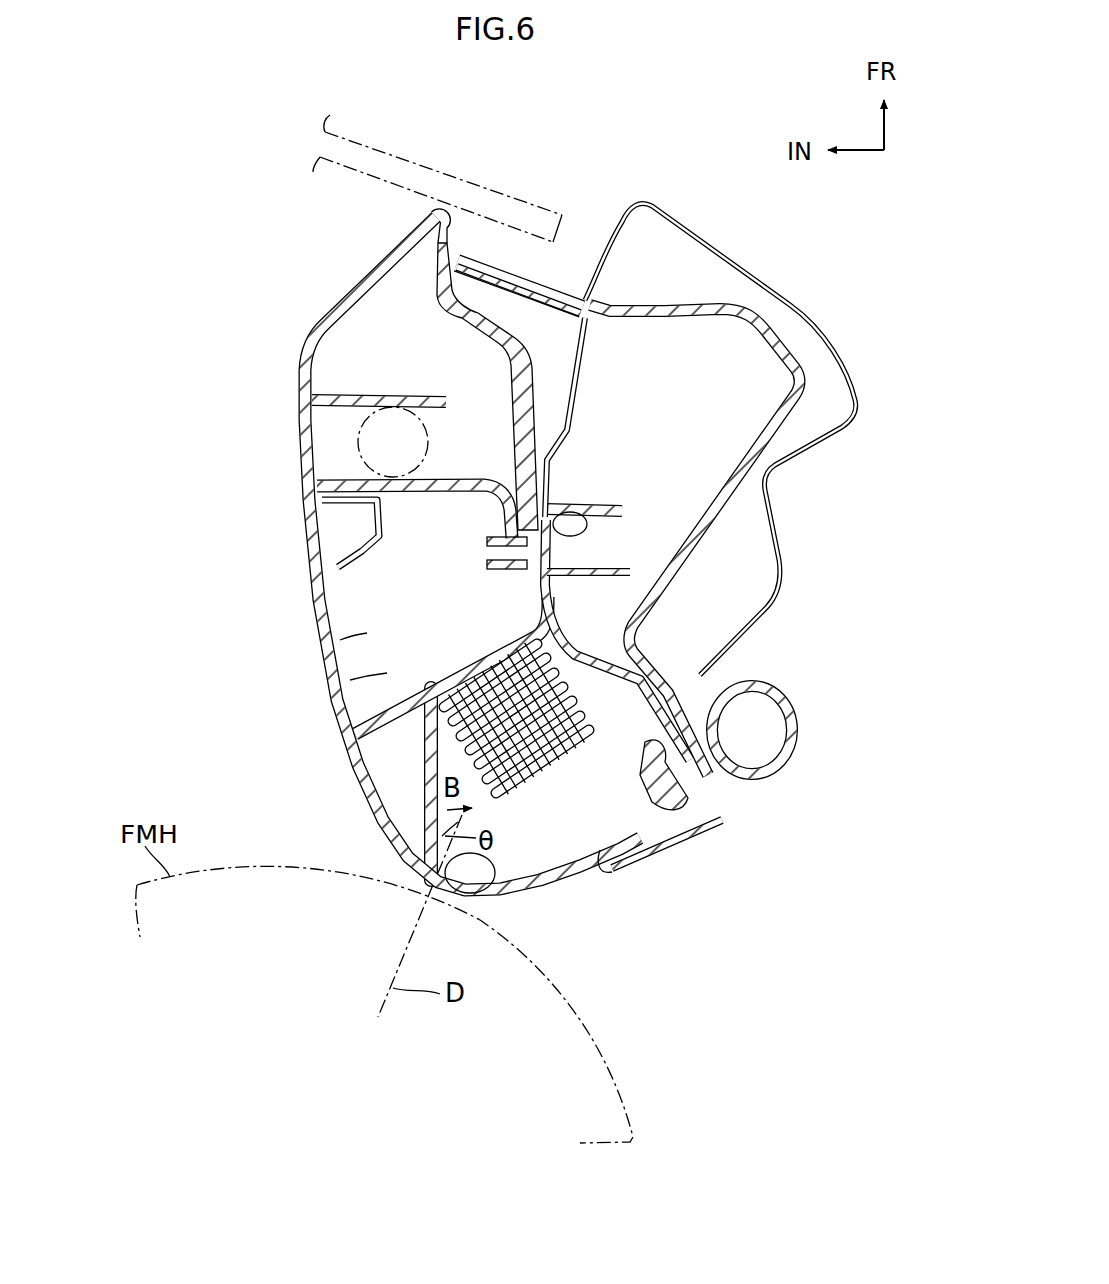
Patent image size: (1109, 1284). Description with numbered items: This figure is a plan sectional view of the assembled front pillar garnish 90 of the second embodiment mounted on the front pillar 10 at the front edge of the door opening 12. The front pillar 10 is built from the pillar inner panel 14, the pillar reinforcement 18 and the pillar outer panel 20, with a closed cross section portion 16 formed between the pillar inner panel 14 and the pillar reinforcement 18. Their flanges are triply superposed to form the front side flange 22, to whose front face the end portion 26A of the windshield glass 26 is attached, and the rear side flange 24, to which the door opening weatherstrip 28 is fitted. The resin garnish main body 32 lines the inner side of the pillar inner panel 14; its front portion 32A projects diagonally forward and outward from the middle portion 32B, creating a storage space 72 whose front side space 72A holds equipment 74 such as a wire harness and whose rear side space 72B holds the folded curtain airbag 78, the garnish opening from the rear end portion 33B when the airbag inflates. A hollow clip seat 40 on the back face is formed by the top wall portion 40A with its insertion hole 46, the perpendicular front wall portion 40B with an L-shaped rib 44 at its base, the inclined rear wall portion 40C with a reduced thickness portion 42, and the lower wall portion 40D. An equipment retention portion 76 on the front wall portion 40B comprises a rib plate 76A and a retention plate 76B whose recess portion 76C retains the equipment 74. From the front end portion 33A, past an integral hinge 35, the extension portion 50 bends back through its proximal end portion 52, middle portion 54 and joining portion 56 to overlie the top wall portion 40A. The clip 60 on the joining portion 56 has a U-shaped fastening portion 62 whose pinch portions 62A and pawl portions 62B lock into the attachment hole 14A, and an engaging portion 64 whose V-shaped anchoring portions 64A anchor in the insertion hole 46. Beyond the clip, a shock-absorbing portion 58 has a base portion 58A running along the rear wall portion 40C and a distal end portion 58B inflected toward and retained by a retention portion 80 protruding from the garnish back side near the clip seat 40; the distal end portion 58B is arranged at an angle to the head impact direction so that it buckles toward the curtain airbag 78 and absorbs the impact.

The front pillar 10 is at (795, 305).
The door opening 12 is at (725, 989).
The pillar inner panel 14 is at (600, 667).
The attachment hole 14A is at (590, 532).
The closed cross section portion 16 is at (673, 401).
The pillar reinforcement 18 is at (670, 320).
The pillar outer panel 20 is at (717, 254).
The front side flange 22 is at (479, 262).
The rear side flange 24 is at (660, 810).
The windshield glass 26 is at (414, 160).
The end portion 26A is at (528, 205).
The door opening weatherstrip 28 is at (630, 877).
The pillar garnish main body 32 is at (312, 330).
The front portion 32A is at (390, 285).
The middle portion 32B is at (320, 600).
The front end portion 33A is at (430, 212).
The rear end portion 33B is at (627, 833).
The integral hinge 35 is at (425, 247).
The clip seat 40 is at (340, 476).
The top wall portion 40A is at (500, 522).
The front wall portion 40B is at (440, 478).
The rear wall portion 40C is at (387, 673).
The lower wall portion 40D is at (367, 633).
The reduced thickness portion 42 is at (333, 703).
The rib 44 is at (313, 585).
The insertion hole 46 is at (497, 606).
The extension portion 50 is at (510, 420).
The proximal end portion 52 is at (430, 275).
The middle portion 54 is at (480, 308).
The joining portion 56 is at (533, 387).
The shock-absorbing portion 58 is at (256, 770).
The base portion 58A is at (433, 713).
The distal end portion 58B is at (433, 787).
The clip 60 is at (578, 587).
The fastening portion 62 is at (851, 503).
The pinch portions 62A is at (612, 517).
The pawl portions 62B is at (574, 500).
The engaging portion 64 is at (410, 545).
The anchoring portions 64A is at (487, 545).
The storage space 72 is at (371, 342).
The front side space 72A is at (392, 349).
The rear side space 72B is at (565, 836).
The equipment 74 is at (440, 434).
The equipment retention portion 76 is at (348, 393).
The rib plate 76A is at (388, 395).
The retention plate 76B is at (335, 447).
The recess portion 76C is at (313, 410).
The curtain airbag 78 is at (580, 748).
The retention portion 80 is at (487, 853).
The front pillar garnish 90 is at (206, 348).